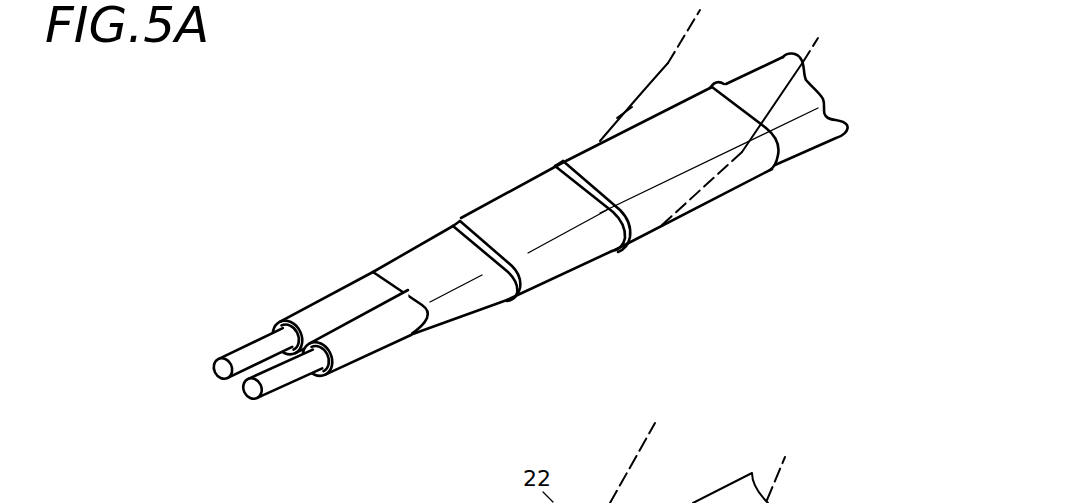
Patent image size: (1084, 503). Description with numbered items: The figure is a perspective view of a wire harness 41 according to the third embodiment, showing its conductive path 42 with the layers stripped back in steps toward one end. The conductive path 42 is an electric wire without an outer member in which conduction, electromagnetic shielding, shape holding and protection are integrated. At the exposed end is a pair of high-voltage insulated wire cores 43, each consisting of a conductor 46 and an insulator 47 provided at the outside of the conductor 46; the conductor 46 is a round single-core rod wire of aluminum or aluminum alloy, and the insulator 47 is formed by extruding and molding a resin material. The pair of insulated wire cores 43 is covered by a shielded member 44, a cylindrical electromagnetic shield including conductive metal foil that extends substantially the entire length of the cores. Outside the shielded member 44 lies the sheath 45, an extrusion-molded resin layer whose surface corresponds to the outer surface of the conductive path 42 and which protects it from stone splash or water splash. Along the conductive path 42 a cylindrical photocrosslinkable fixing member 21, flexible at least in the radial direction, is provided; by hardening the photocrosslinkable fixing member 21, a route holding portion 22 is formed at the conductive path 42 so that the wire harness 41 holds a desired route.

The photocrosslinkable fixing member 21 is at (605, 158).
The route holding portion 22 is at (672, 80).
The wire harness 41 is at (415, 125).
The conductive path 42 is at (388, 214).
The insulated wire core 43 is at (185, 250).
The shielded member 44 is at (460, 297).
The sheath 45 is at (506, 208).
The conductor 46 is at (248, 348).
The insulator 47 is at (312, 312).